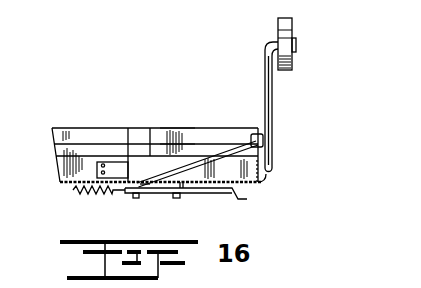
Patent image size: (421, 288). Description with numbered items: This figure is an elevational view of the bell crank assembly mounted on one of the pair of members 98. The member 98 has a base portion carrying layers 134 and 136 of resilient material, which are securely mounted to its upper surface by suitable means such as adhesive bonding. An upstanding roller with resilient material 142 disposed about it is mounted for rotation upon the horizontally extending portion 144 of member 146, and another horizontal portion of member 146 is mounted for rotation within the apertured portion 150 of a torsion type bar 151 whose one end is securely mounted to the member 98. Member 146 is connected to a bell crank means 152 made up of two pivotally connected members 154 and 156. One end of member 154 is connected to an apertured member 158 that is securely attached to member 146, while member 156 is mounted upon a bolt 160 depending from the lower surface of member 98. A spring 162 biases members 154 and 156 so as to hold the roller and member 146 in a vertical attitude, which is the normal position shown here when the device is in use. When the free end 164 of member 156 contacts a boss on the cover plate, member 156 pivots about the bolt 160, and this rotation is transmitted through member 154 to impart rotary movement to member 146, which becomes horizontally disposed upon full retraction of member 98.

The layer of resilient material 134 is at (66, 138).
The layer of resilient material 136 is at (106, 133).
The torsion type bar 151 is at (129, 128).
The member 98 is at (171, 128).
The member 154 is at (184, 150).
The apertured member 158 is at (264, 134).
The member 146 is at (264, 70).
The apertured portion 150 is at (273, 168).
The resilient material 142 is at (293, 26).
The horizontally extending portion 144 is at (297, 45).
The free end 164 is at (238, 200).
The bolt 160 is at (190, 193).
The member 156 is at (146, 193).
The bell crank means 152 is at (140, 197).
The spring 162 is at (96, 196).